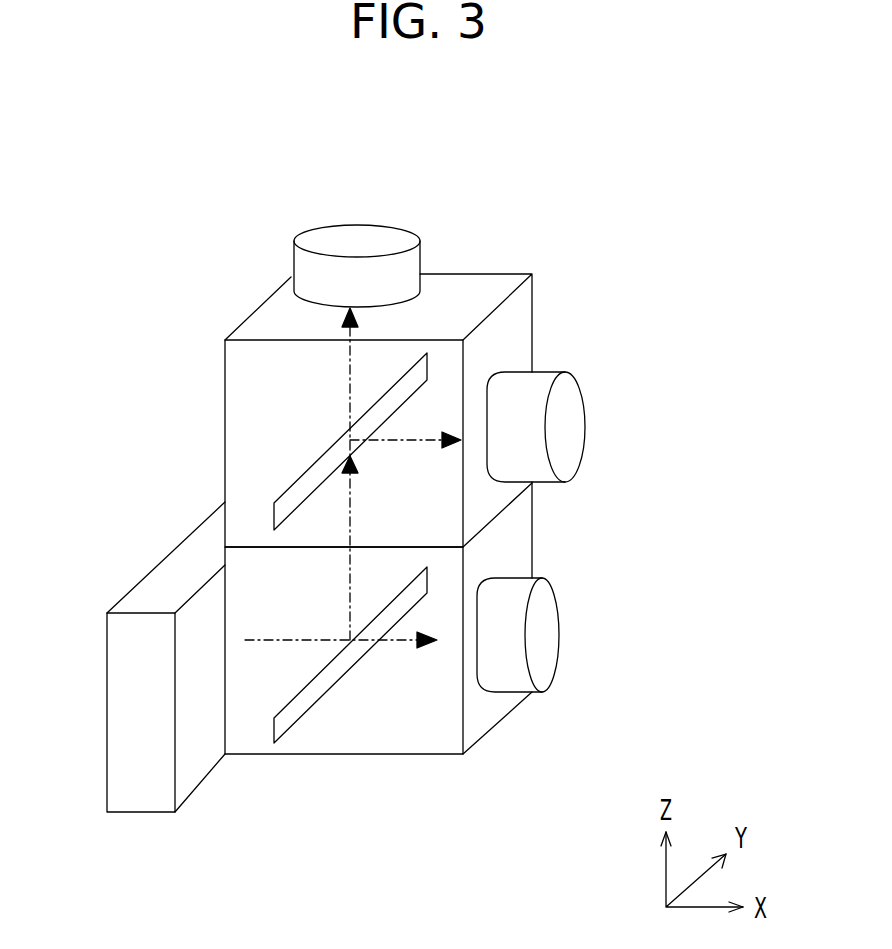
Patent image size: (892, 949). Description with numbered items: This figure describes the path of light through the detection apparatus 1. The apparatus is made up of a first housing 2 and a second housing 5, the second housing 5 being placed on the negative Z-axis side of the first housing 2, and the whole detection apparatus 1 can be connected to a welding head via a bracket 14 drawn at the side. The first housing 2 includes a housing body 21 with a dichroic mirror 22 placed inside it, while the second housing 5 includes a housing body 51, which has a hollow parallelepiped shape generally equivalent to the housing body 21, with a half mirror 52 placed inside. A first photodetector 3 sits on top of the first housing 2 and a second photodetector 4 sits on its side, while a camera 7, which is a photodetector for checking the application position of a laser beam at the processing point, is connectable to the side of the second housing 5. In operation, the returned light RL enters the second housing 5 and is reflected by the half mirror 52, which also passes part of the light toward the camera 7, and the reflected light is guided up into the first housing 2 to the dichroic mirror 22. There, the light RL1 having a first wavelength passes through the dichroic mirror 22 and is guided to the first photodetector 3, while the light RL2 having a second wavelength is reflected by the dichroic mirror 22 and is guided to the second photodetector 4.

The detection apparatus 1 is at (634, 133).
The first housing 2 is at (545, 320).
The housing body 21 is at (242, 413).
The dichroic mirror 22 is at (277, 503).
The first photodetector 3 is at (375, 240).
The second photodetector 4 is at (568, 412).
The second housing 5 is at (543, 562).
The housing body 51 is at (480, 713).
The half mirror 52 is at (297, 720).
The camera 7 is at (548, 648).
The bracket 14 is at (140, 800).
The light having a first wavelength RL1 is at (348, 382).
The light having a second wavelength RL2 is at (440, 445).
The returned light RL is at (262, 645).